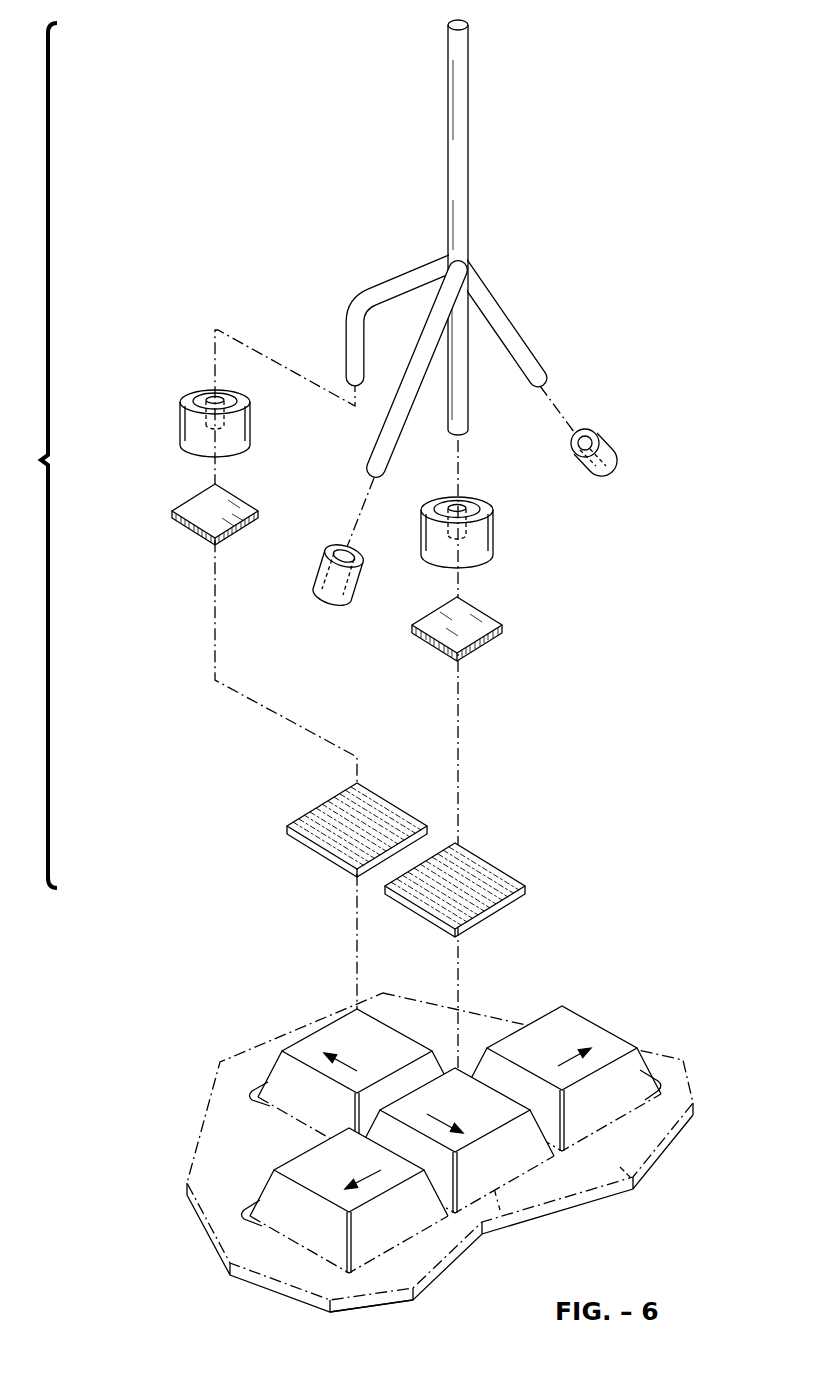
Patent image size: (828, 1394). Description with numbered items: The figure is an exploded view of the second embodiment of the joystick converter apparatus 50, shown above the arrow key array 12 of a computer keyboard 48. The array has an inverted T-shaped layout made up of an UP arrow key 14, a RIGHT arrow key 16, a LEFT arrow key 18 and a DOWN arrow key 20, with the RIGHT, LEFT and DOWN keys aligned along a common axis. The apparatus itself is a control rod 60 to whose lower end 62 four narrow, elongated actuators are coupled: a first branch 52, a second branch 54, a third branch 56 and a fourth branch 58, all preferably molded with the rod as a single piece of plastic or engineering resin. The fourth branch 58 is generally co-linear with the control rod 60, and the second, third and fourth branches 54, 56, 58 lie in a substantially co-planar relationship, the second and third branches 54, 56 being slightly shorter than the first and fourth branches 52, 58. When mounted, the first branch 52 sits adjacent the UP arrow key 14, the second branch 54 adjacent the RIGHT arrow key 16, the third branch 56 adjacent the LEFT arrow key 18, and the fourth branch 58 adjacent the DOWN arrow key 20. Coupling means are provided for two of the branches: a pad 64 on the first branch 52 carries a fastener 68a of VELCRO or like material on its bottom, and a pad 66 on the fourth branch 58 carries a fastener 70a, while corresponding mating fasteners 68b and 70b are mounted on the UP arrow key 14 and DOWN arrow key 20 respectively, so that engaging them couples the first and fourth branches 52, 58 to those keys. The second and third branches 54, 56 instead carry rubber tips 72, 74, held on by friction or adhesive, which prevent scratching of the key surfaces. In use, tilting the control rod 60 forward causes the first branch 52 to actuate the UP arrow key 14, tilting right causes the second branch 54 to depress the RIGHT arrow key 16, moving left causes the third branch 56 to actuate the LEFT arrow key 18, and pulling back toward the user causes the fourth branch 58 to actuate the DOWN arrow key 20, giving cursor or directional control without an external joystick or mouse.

The arrow key array 12 is at (402, 1152).
The UP arrow key 14 is at (287, 1120).
The RIGHT arrow key 16 is at (668, 1123).
The LEFT arrow key 18 is at (445, 1262).
The DOWN arrow key 20 is at (515, 1226).
The computer keyboard 48 is at (632, 1186).
The joystick converter apparatus (second embodiment) 50 is at (31, 455).
The first branch 52 is at (364, 292).
The second branch 54 is at (509, 312).
The third branch 56 is at (385, 447).
The fourth branch 58 is at (467, 420).
The control rod 60 is at (463, 72).
The lower end 62 is at (480, 240).
The pad 64 is at (188, 410).
The pad 66 is at (488, 540).
The fastener 68a is at (200, 505).
The mating fastener 68b is at (318, 845).
The fastener 70a is at (488, 622).
The mating fastener 70b is at (500, 875).
The rubber tip 72 is at (599, 440).
The rubber tip 74 is at (323, 607).